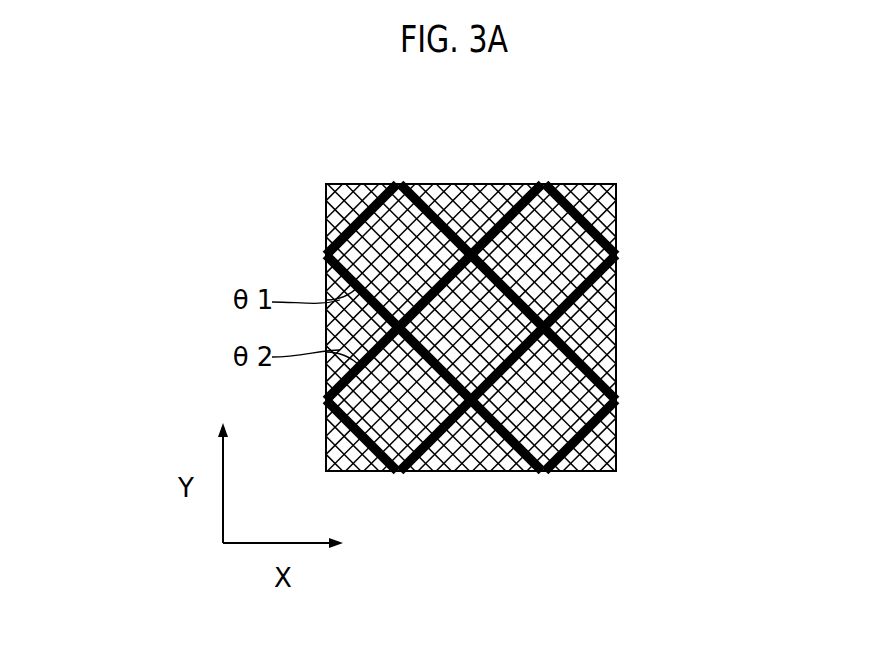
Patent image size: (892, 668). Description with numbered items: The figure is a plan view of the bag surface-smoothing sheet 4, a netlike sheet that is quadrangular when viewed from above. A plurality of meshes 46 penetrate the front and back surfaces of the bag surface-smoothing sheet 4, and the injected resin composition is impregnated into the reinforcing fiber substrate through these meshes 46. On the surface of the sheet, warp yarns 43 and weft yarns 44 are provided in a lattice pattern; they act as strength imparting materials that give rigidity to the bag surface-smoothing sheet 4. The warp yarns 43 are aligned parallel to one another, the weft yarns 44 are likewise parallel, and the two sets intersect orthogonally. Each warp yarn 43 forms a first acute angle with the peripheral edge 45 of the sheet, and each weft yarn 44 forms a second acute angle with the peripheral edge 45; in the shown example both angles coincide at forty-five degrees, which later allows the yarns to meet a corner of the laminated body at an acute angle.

The bag surface-smoothing sheet 4 is at (318, 214).
The warp yarns 43 is at (326, 263).
The weft yarns 44 is at (392, 184).
The peripheral edge 45 is at (326, 247).
The meshes 46 is at (616, 190).